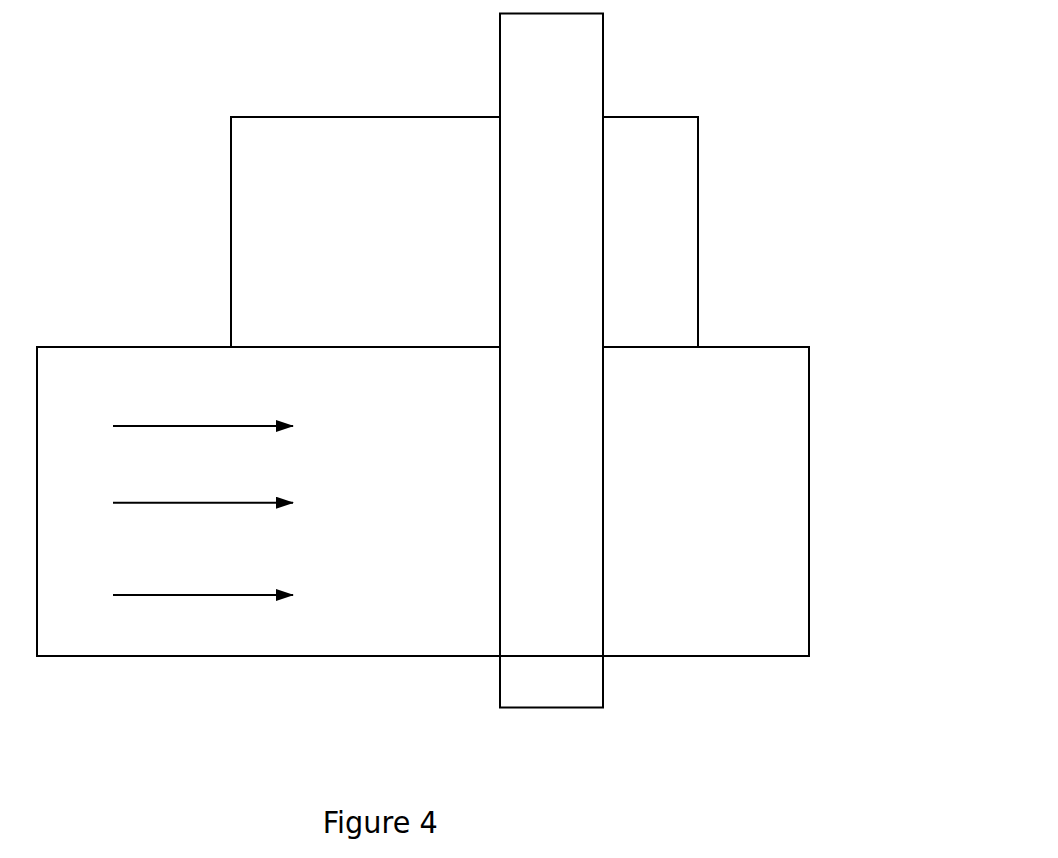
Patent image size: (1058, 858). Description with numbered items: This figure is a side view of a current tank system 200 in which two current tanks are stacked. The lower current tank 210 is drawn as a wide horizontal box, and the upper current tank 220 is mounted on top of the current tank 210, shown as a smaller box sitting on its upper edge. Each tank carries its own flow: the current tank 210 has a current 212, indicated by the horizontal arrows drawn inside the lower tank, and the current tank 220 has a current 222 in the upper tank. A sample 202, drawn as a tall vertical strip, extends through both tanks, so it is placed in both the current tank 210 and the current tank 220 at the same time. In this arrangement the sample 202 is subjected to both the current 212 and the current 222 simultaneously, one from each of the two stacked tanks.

The system 200 is at (828, 312).
The sample 202 is at (551, 361).
The current tank 210 is at (423, 501).
The current 212 is at (203, 510).
The current tank 220 is at (464, 232).
The current 222 is at (409, 230).